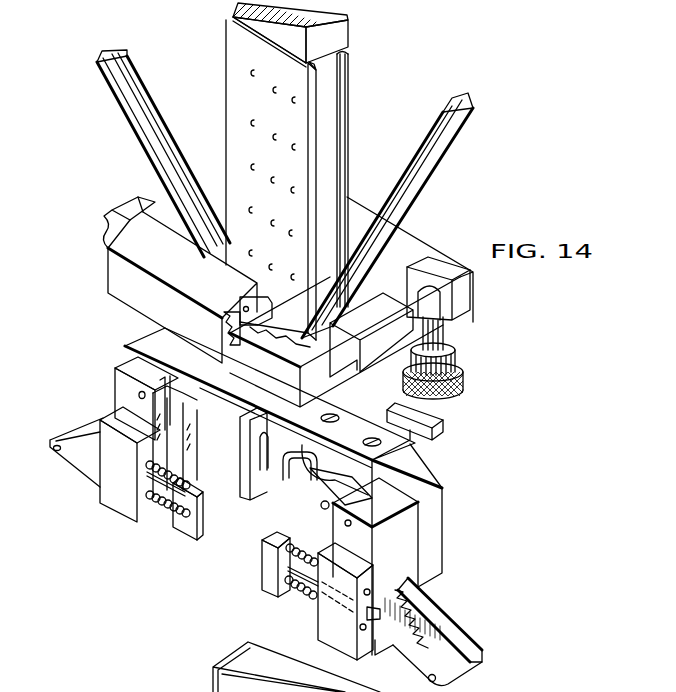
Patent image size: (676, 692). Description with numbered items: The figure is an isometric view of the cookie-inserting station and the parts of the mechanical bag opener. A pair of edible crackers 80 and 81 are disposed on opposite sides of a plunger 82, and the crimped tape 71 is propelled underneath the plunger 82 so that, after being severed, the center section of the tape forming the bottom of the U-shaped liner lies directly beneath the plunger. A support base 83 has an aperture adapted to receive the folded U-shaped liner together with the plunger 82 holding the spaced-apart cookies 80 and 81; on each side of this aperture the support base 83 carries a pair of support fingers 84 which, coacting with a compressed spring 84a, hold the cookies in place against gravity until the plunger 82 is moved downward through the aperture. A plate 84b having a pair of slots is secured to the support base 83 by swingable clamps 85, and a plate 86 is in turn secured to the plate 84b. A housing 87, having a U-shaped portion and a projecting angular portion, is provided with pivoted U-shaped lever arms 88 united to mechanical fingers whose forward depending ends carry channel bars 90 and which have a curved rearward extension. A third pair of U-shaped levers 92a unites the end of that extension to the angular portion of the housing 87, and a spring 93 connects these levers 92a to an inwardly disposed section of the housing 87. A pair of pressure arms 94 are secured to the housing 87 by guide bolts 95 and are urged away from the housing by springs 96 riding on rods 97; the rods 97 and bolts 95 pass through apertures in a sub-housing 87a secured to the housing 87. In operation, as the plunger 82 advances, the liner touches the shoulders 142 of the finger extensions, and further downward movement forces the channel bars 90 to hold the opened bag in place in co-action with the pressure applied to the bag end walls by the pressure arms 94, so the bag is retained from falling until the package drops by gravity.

The crimped tape 71 is at (155, 108).
The edible cracker 80 is at (227, 34).
The edible cracker 81 is at (349, 88).
The plunger 82 is at (350, 28).
The support base 83 is at (415, 242).
The support finger 84 is at (257, 298).
The compressed spring 84a is at (230, 323).
The plate 84b is at (445, 430).
The swingable clamp 85 is at (460, 376).
The plate 86 is at (420, 474).
The housing 87 is at (140, 355).
The sub-housing 87a is at (348, 637).
The U-shaped lever arm 88 is at (117, 367).
The channel bar 90 is at (270, 520).
The U-shaped lever 92a is at (380, 660).
The spring 93 is at (427, 620).
The pressure arm 94 is at (197, 530).
The guide bolt 95 is at (155, 505).
The spring 96 is at (150, 500).
The rod 97 is at (167, 512).
The shoulder 142 is at (267, 433).